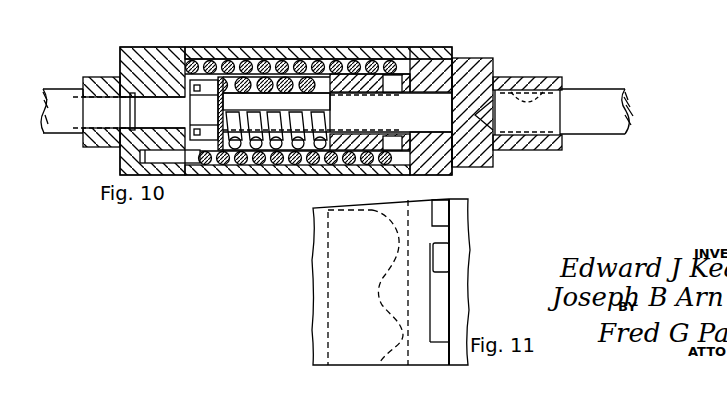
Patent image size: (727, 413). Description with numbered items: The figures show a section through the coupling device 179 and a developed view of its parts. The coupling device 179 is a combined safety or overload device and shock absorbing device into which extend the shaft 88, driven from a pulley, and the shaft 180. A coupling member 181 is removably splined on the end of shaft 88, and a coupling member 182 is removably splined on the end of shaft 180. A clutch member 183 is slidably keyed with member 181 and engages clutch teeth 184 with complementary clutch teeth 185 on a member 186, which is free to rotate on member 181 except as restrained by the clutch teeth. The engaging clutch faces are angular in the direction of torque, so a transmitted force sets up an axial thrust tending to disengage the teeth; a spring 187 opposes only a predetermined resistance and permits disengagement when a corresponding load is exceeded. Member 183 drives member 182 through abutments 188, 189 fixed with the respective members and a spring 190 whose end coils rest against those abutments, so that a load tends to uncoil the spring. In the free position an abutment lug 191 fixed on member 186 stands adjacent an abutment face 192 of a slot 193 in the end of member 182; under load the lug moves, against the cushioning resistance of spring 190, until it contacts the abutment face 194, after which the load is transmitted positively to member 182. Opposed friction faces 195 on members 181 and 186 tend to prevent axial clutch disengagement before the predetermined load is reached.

In FIG. 10, the shaft 88 is at (602, 135).
In FIG. 10, the coupling device 179 is at (297, 41).
In FIG. 10, the shaft 180 is at (62, 133).
In FIG. 10, the coupling member 181 is at (493, 78).
In FIG. 10, the coupling member 182 is at (170, 53).
In FIG. 10, the clutch member 183 is at (310, 172).
In FIG. 10, the clutch teeth 184 is at (347, 170).
In FIG. 11, the clutch teeth 184 is at (393, 240).
In FIG. 10, the complementary clutch teeth 185 is at (388, 145).
In FIG. 11, the complementary clutch teeth 185 is at (392, 307).
In FIG. 10, the member 186 is at (455, 153).
In FIG. 10, the spring 187 is at (263, 172).
In FIG. 10, the abutment 188 is at (378, 145).
In FIG. 10, the abutment 189 is at (190, 165).
In FIG. 10, the spring 190 is at (313, 51).
In FIG. 10, the abutment lug 191 is at (455, 52).
In FIG. 11, the abutment lug 191 is at (440, 257).
In FIG. 11, the abutment face 192 is at (440, 229).
In FIG. 10, the slot 193 is at (430, 50).
In FIG. 11, the slot 193 is at (440, 297).
In FIG. 11, the abutment face 194 is at (435, 341).
In FIG. 10, the friction faces 195 is at (485, 68).